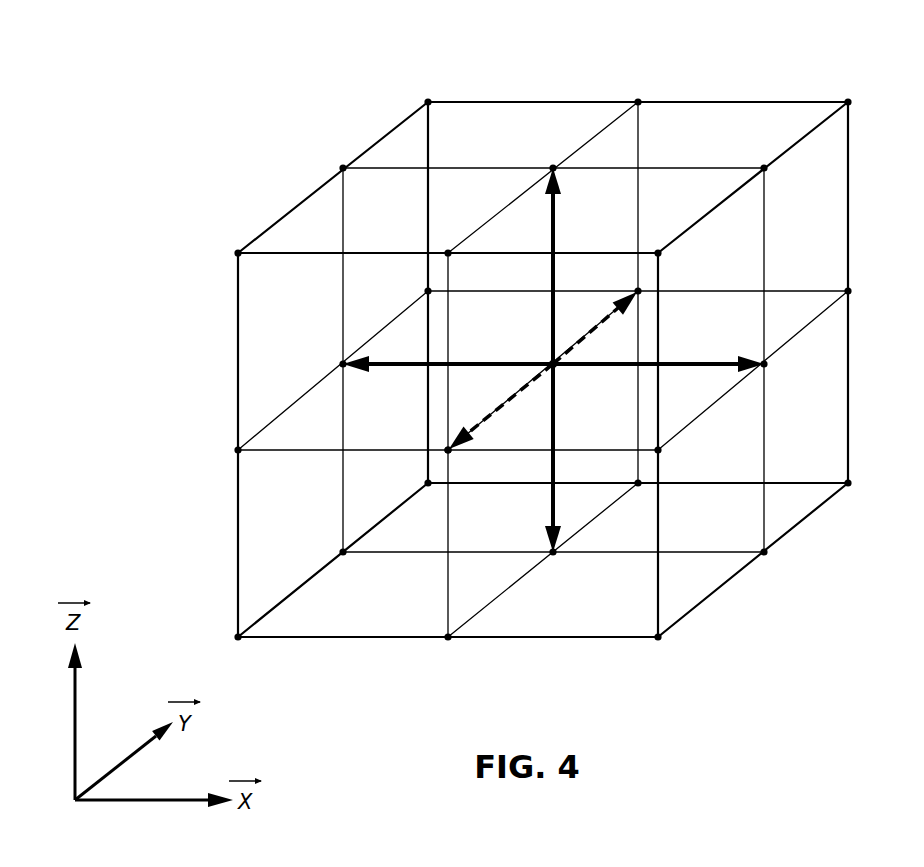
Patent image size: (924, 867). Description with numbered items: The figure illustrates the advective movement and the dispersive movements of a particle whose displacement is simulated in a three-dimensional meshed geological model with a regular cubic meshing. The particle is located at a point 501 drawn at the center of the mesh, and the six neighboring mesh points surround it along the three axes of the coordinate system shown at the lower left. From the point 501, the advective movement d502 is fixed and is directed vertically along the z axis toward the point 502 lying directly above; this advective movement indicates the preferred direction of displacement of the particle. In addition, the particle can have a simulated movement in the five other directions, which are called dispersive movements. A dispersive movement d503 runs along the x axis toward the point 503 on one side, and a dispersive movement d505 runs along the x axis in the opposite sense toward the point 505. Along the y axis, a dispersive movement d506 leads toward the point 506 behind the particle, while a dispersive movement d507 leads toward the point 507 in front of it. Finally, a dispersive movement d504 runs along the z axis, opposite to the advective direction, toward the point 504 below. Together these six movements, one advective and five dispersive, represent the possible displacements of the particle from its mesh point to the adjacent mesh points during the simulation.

The point 501 is at (563, 379).
The point 502 is at (551, 161).
The point 503 is at (773, 373).
The point 504 is at (557, 563).
The point 505 is at (335, 359).
The point 506 is at (646, 295).
The point 507 is at (437, 456).
The advective movement d502 is at (547, 234).
The dispersive movement d503 is at (684, 358).
The dispersive movement d504 is at (563, 469).
The dispersive movement d505 is at (412, 357).
The dispersive movement d506 is at (585, 329).
The dispersive movement d507 is at (512, 406).